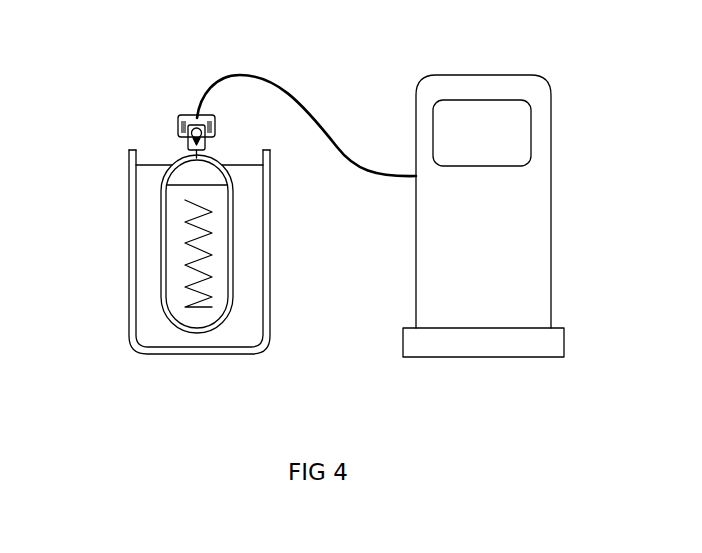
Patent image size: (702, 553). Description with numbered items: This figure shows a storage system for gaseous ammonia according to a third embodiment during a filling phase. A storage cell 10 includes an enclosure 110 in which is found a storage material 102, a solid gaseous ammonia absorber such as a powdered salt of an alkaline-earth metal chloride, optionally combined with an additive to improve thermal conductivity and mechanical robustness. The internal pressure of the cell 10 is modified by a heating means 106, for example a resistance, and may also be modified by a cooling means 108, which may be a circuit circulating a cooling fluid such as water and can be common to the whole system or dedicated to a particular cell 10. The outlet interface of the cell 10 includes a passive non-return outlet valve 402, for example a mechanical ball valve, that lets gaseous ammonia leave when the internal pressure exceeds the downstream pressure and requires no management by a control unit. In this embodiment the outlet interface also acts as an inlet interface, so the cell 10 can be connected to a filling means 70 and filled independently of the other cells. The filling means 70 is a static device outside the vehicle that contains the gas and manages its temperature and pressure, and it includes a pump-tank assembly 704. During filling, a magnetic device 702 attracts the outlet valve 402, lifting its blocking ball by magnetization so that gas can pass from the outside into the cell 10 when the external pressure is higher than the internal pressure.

The storage cell 10 is at (237, 263).
The filling means 70 is at (187, 116).
The storage material 102 is at (213, 263).
The heating means 106 is at (206, 212).
The cooling means 108 is at (240, 353).
The enclosure 110 is at (233, 187).
The passive non-return outlet valve 402 is at (188, 144).
The magnetic device 702 is at (178, 125).
The pump-tank assembly 704 is at (510, 75).